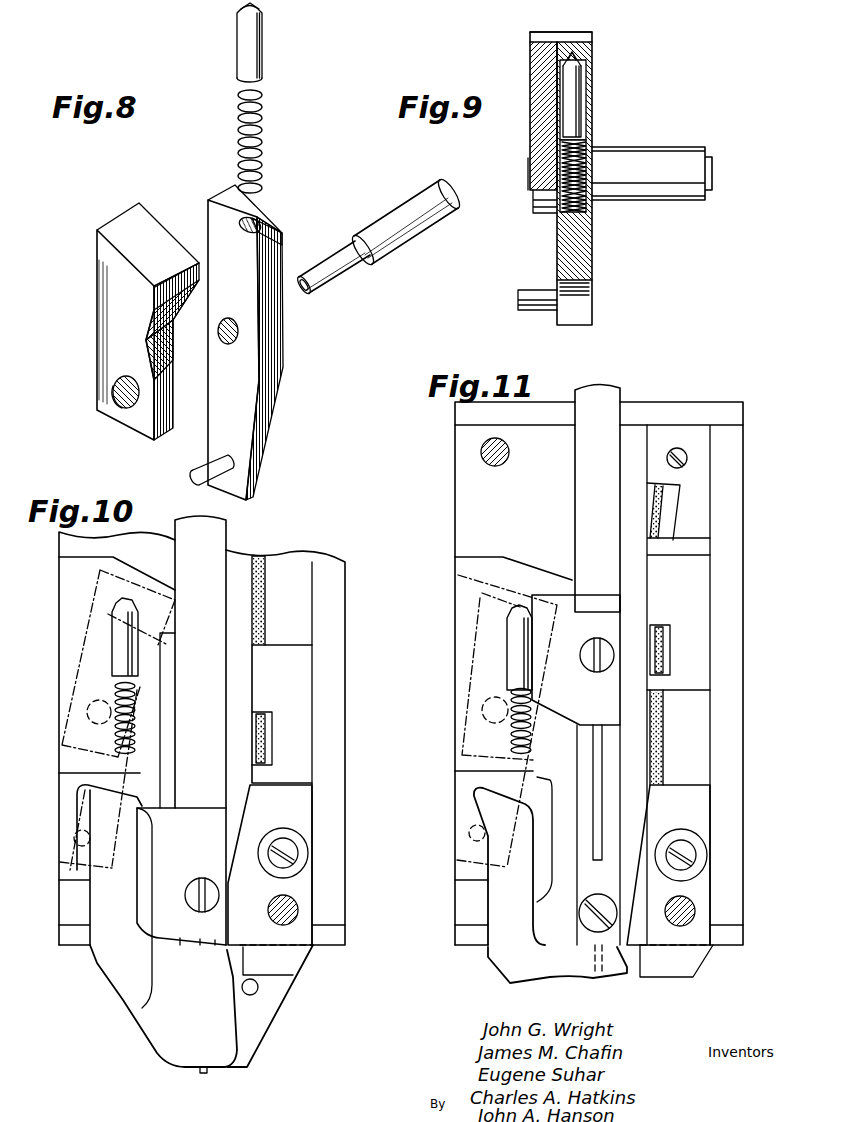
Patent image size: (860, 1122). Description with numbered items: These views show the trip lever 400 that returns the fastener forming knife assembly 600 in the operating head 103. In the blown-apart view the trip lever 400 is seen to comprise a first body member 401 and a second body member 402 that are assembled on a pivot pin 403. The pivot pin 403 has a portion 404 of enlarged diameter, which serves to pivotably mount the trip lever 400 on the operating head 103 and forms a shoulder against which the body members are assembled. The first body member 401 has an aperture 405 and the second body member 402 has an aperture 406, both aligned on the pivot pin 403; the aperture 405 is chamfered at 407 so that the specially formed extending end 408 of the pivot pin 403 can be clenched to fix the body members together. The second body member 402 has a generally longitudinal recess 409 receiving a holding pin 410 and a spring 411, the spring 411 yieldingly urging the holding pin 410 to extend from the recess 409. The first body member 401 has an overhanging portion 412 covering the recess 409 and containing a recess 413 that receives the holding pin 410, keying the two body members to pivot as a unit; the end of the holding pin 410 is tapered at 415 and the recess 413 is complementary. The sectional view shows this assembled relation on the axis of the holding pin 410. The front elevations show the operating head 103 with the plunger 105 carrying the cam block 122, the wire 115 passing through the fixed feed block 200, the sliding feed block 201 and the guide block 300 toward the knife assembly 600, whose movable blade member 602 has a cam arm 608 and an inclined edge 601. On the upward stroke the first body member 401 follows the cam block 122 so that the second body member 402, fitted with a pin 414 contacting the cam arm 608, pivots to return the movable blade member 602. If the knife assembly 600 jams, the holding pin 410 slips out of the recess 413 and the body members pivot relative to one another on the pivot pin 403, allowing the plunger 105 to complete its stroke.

In FIG. 10, the operating head 103 is at (346, 852).
In FIG. 11, the operating head 103 is at (744, 838).
In FIG. 10, the plunger 105 is at (193, 730).
In FIG. 11, the plunger 105 is at (597, 498).
In FIG. 10, the wire 115 is at (265, 603).
In FIG. 11, the wire 115 is at (664, 733).
In FIG. 10, the cam block 122 is at (181, 876).
In FIG. 11, the cam block 122 is at (576, 770).
In FIG. 11, the wire feed block 200 is at (678, 685).
In FIG. 10, the wire feed block 201 is at (282, 714).
In FIG. 11, the wire feed block 201 is at (678, 634).
In FIG. 10, the guide block 300 is at (270, 865).
In FIG. 11, the guide block 300 is at (670, 881).
In FIG. 10, the trip lever 400 is at (58, 720).
In FIG. 11, the trip lever 400 is at (454, 746).
In FIG. 8, the first body member 401 is at (108, 267).
In FIG. 9, the first body member 401 is at (540, 122).
In FIG. 10, the first body member 401 is at (98, 627).
In FIG. 11, the first body member 401 is at (466, 630).
In FIG. 8, the second body member 402 is at (282, 405).
In FIG. 9, the second body member 402 is at (565, 246).
In FIG. 10, the second body member 402 is at (72, 786).
In FIG. 11, the second body member 402 is at (467, 802).
In FIG. 8, the pivot pin 403 is at (352, 282).
In FIG. 8, the portion of enlarged diameter 404 is at (395, 215).
In FIG. 9, the portion of enlarged diameter 404 is at (653, 201).
In FIG. 8, the aperture 405 is at (117, 386).
In FIG. 8, the aperture 406 is at (218, 331).
In FIG. 8, the chamfer 407 is at (116, 408).
In FIG. 8, the extending end of pivot pin 408 is at (300, 296).
In FIG. 8, the longitudinal recess 409 is at (258, 223).
In FIG. 8, the holding pin 410 is at (263, 42).
In FIG. 9, the holding pin 410 is at (580, 92).
In FIG. 10, the holding pin 410 is at (112, 650).
In FIG. 11, the holding pin 410 is at (505, 657).
In FIG. 8, the spring 411 is at (264, 138).
In FIG. 9, the spring 411 is at (597, 137).
In FIG. 8, the overhanging portion 412 is at (200, 258).
In FIG. 9, the overhanging portion 412 is at (588, 45).
In FIG. 9, the recess 413 is at (590, 58).
In FIG. 8, the pin 414 is at (196, 472).
In FIG. 9, the pin 414 is at (535, 311).
In FIG. 8, the tapered end 415 is at (240, 8).
In FIG. 9, the tapered end 415 is at (565, 57).
In FIG. 10, the fastener forming knife assembly 600 is at (180, 1077).
In FIG. 10, the inclined edge 601 is at (266, 1016).
In FIG. 10, the movable blade member 602 is at (135, 1005).
In FIG. 10, the cam arm 608 is at (98, 897).
In FIG. 11, the cam arm 608 is at (493, 893).